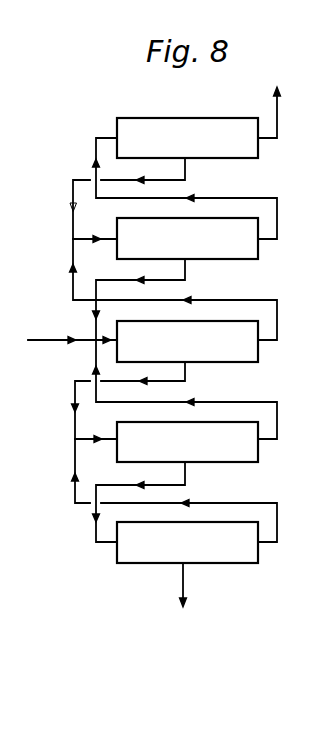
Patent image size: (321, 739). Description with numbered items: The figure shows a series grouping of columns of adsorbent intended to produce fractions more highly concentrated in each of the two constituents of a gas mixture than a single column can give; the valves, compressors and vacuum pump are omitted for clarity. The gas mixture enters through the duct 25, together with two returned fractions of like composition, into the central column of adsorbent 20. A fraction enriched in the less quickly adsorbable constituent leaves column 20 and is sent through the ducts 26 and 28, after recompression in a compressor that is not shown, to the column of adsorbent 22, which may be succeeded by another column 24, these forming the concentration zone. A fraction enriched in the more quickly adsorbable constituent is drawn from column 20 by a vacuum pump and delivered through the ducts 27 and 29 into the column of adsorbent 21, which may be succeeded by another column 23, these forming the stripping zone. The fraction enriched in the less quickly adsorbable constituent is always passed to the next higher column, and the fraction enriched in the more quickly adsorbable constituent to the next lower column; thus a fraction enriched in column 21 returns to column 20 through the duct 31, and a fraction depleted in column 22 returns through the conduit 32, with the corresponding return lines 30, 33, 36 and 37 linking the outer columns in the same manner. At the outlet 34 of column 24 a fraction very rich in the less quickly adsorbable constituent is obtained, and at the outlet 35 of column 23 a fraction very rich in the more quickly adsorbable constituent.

The column of adsorbent 20 is at (219, 362).
The column of adsorbent 21 is at (223, 462).
The column of adsorbent 22 is at (217, 259).
The column 23 is at (226, 563).
The column 24 is at (218, 158).
The duct 25 is at (56, 339).
The duct 26 is at (259, 300).
The duct 27 is at (73, 392).
The duct 28 is at (80, 238).
The duct 29 is at (86, 440).
The recycle line from stage 22 to stage 24 30 is at (262, 198).
The duct 31 is at (255, 402).
The conduit 32 is at (119, 279).
The transfer line from stage 21 to stage 23 33 is at (185, 485).
The outlet 34 is at (277, 121).
The outlet 35 is at (182, 584).
The transfer line from stage 24 to stage 22 36 is at (73, 178).
The recycle line from stage 23 to stage 21 37 is at (258, 503).